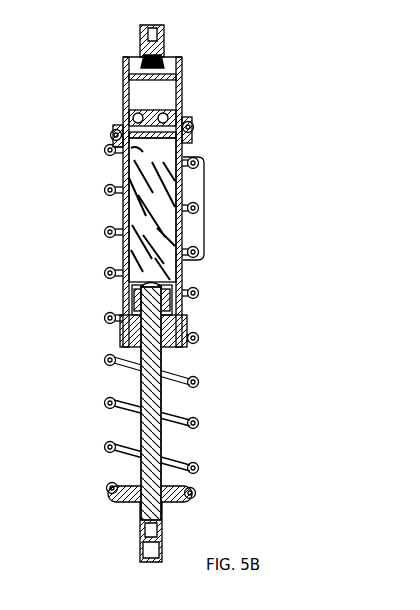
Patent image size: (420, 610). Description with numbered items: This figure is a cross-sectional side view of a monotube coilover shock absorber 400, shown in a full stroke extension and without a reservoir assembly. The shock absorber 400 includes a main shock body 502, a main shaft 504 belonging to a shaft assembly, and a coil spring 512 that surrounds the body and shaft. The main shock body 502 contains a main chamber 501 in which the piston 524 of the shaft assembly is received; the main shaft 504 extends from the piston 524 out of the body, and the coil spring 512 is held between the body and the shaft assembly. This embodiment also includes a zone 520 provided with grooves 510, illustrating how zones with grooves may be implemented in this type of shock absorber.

The shock absorber assembly 400 is at (268, 100).
The main shock body 502 is at (122, 96).
The main chamber 501 is at (146, 152).
The coil spring 512 is at (104, 236).
The zone 520 is at (204, 209).
The grooves 510 is at (172, 238).
The piston 524 is at (183, 307).
The main shaft 504 is at (165, 400).